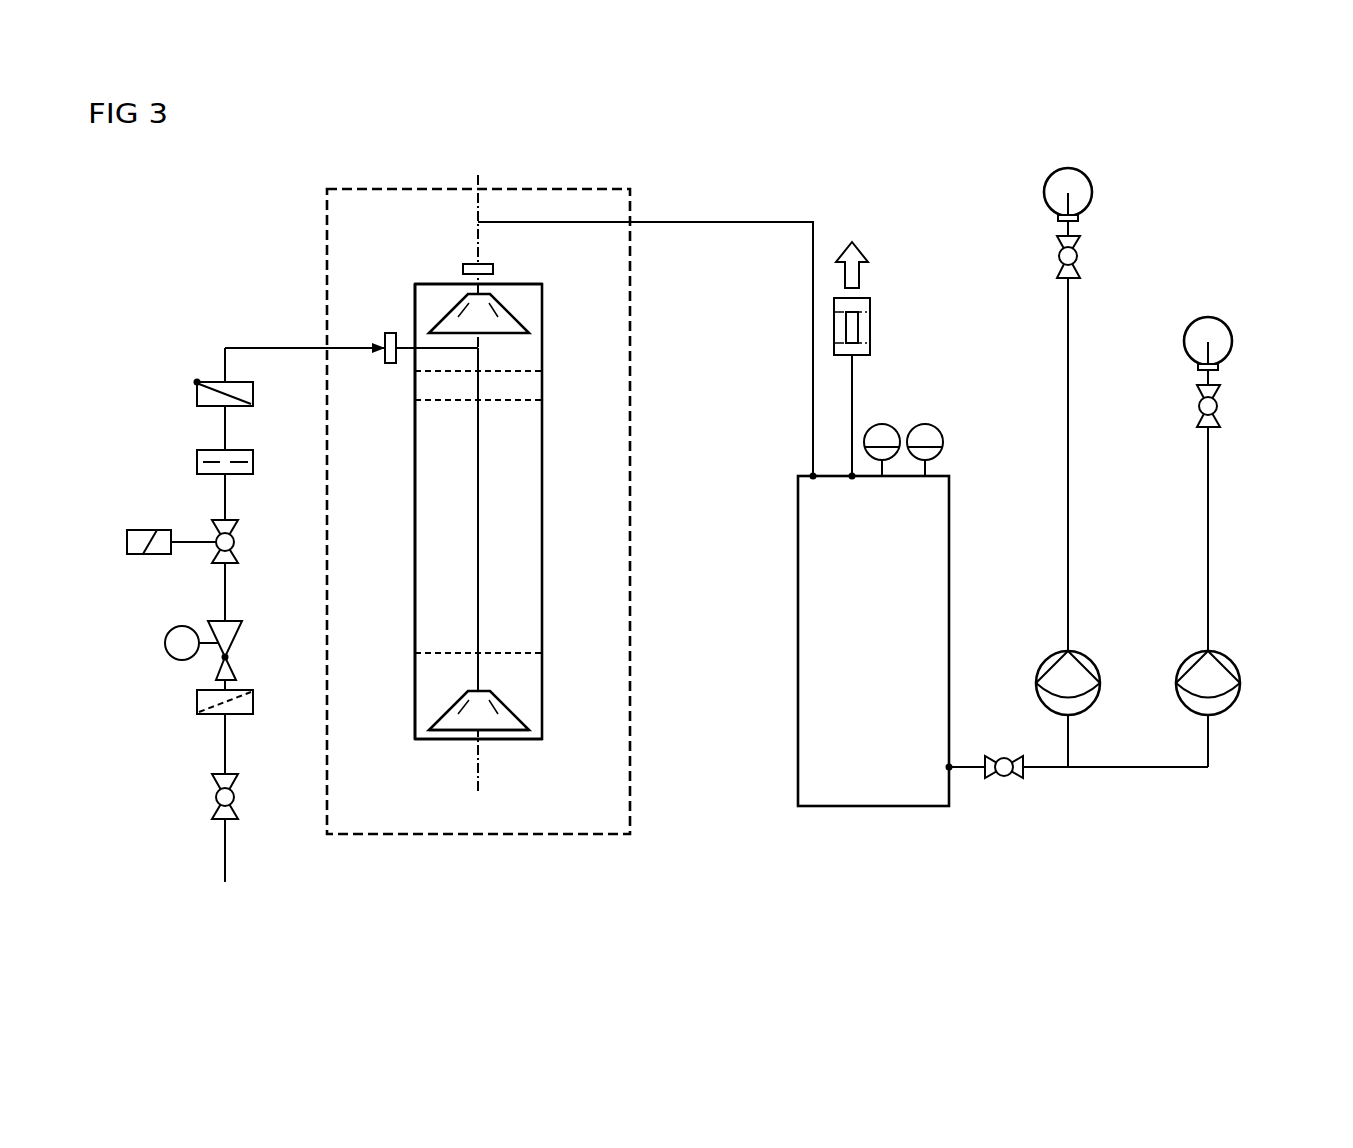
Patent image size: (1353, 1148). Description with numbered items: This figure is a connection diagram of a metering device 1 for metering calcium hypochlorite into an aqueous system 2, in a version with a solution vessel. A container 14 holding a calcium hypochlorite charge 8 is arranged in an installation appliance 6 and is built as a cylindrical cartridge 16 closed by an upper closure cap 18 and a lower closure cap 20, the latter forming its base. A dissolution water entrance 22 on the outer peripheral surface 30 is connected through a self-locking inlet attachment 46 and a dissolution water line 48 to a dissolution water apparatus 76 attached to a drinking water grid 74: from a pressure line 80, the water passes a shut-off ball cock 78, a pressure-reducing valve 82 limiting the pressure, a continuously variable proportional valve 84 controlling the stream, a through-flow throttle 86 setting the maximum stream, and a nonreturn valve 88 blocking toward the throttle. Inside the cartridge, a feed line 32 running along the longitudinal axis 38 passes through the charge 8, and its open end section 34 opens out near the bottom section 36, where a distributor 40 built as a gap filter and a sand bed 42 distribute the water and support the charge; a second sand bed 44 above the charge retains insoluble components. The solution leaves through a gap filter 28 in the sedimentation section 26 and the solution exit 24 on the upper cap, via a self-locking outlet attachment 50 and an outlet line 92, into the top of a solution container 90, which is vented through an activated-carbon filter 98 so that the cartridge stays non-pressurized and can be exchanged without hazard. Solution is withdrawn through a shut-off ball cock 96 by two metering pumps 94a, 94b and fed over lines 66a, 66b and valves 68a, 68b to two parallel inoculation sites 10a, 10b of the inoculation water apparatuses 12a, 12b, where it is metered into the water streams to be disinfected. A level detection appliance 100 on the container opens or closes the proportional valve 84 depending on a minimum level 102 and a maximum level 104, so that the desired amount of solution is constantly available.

The metering device 1 is at (268, 197).
The aqueous system 2 is at (1209, 312).
The installation appliance 6 is at (636, 436).
The calcium hypochlorite charge 8 is at (520, 553).
The inoculation site 10a is at (1044, 192).
The inoculation site 10b is at (1184, 340).
The inoculation water apparatus 12a is at (1097, 228).
The inoculation water apparatus 12b is at (1237, 377).
The calcium hypochlorite container 14 is at (558, 594).
The cartridge 16 is at (543, 630).
The upper closure cap 18 is at (430, 283).
The lower closure cap 20 is at (425, 741).
The dissolution water entrance 22 is at (376, 307).
The solution exit 24 is at (506, 278).
The sedimentation section 26 is at (514, 353).
The gap filter 28 is at (505, 322).
The outer peripheral surface 30 is at (414, 484).
The feed line 32 is at (481, 485).
The open end section 34 is at (506, 689).
The bottom section 36 is at (400, 705).
The longitudinal axis 38 is at (480, 762).
The distributor 40 is at (450, 728).
The sand bed 42 is at (525, 712).
The sand bed 44 is at (520, 386).
The inlet attachment 46 is at (390, 364).
The dissolution water line 48 is at (223, 362).
The outlet attachment 50 is at (470, 263).
The first absorbent line 66a is at (1070, 483).
The second absorbent line 66b is at (1210, 483).
The first tank valve 68a is at (1080, 256).
The second tank valve 68b is at (1220, 406).
The drinking water grid 74 is at (220, 882).
The dissolution water apparatus 76 is at (172, 312).
The shut-off ball cock 78 is at (213, 797).
The pressure line 80 is at (223, 742).
The pressure-reducing valve 82 is at (165, 655).
The proportional valve 84 is at (157, 556).
The through-flow throttle 86 is at (196, 458).
The nonreturn valve 88 is at (196, 397).
The solution container 90 is at (950, 570).
The outlet line 92 is at (708, 221).
The metering pump 94a is at (1087, 652).
The metering pump 94b is at (1227, 652).
The shut-off ball cock 96 is at (1005, 778).
The filter 98 is at (866, 297).
The level detection appliance 100 is at (946, 420).
The minimum level 102 is at (882, 423).
The maximum level 104 is at (927, 423).